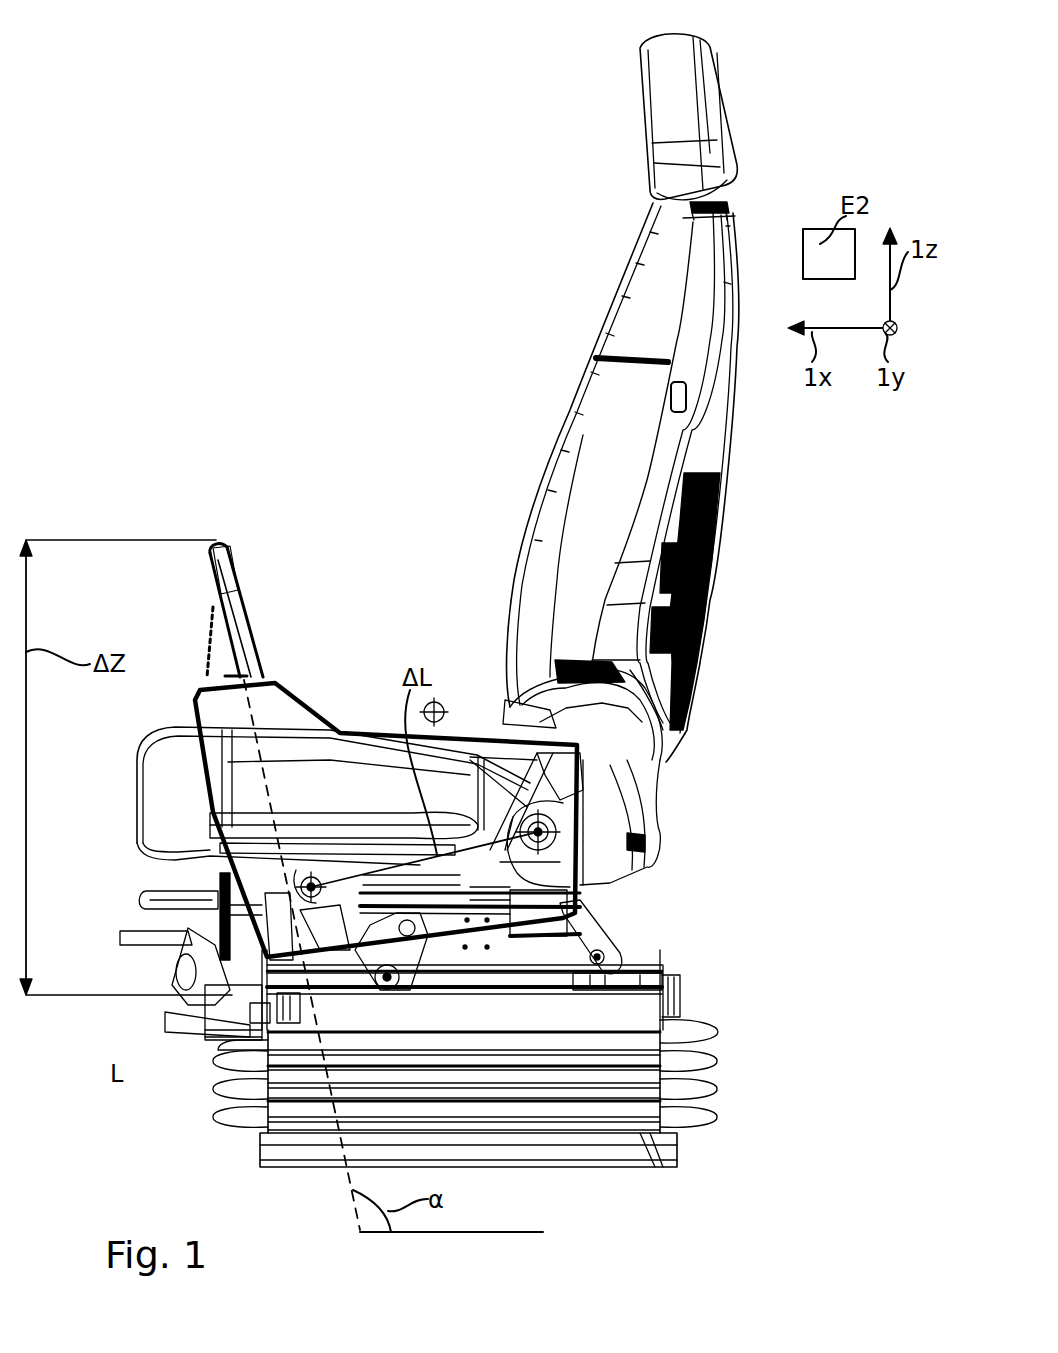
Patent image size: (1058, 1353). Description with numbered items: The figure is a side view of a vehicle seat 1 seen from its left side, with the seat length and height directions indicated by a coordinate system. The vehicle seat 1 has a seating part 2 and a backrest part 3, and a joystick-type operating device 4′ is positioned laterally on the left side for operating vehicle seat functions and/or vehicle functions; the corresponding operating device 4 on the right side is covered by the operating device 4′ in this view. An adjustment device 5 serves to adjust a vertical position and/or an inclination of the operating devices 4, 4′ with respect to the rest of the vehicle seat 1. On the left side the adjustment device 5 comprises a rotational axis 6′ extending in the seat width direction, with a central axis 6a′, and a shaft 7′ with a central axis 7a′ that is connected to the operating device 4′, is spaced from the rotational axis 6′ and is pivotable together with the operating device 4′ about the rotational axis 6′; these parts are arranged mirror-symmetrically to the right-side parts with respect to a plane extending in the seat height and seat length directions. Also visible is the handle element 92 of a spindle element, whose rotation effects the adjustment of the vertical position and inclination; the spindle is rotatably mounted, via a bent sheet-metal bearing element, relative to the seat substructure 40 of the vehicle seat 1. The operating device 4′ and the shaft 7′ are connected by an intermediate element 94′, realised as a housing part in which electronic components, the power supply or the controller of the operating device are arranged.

The vehicle seat 1 is at (392, 330).
The seating part 2 is at (355, 767).
The backrest part 3 is at (563, 505).
The operating device 4 is at (264, 568).
The operating device 4′ is at (222, 598).
The adjustment device 5 is at (387, 997).
The rotational axis 6′ is at (540, 834).
The central axis of the rotational axis 6a′ is at (540, 834).
The shaft 7′ is at (308, 882).
The central axis of the shaft 7a′ is at (313, 880).
The seat substructure 40 is at (688, 931).
The handle element 92 is at (183, 972).
The intermediate element 94′ is at (557, 767).